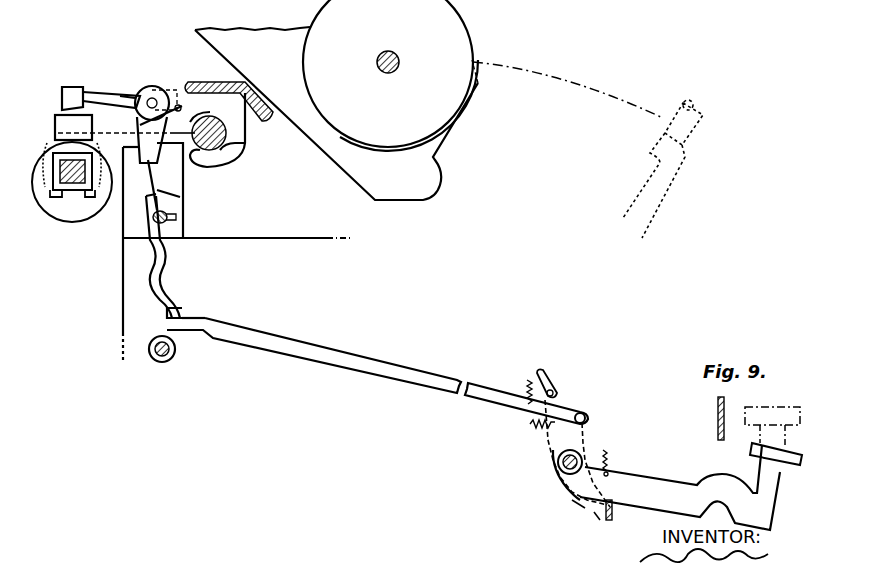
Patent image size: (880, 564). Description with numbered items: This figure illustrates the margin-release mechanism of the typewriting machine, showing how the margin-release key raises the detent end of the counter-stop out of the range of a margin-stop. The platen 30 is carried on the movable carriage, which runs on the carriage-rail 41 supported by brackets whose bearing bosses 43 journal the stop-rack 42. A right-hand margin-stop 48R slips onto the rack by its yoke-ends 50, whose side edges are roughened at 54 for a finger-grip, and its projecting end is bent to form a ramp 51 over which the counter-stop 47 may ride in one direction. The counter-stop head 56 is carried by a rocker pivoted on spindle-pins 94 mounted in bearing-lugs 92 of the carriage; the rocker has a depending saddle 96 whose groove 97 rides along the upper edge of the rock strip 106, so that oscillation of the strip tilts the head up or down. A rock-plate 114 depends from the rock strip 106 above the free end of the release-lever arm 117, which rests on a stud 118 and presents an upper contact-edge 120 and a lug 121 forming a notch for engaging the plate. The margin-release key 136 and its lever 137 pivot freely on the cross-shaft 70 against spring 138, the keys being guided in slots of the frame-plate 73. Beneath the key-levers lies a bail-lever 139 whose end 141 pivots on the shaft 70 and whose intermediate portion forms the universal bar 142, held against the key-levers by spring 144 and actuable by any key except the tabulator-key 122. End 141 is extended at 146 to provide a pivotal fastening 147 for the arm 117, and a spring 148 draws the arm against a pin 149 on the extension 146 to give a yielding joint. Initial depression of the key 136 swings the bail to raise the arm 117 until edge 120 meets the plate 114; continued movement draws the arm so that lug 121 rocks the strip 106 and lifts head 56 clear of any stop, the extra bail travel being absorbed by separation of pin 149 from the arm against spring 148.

The platen 30 is at (390, 75).
The carriage-rail 41 is at (240, 143).
The stop-rack 42 is at (68, 180).
The bearing bosses 43 is at (73, 208).
The counter-stop 47 is at (121, 93).
The right-hand margin-stop 48R is at (92, 117).
The yoke-ends 50 is at (53, 197).
The cam portion or ramp 51 is at (56, 128).
The roughened side edges 54 is at (97, 185).
The counter-stop head 56 is at (62, 88).
The cross-shaft 70 is at (580, 457).
The frame-plate 73 is at (714, 425).
The bearing-lugs 92 is at (185, 104).
The spindle-pins 94 is at (155, 98).
The saddle 96 is at (154, 157).
The flute or groove 97 is at (148, 160).
The rock strip or bar 106 is at (157, 190).
The rock-plate or extension 114 is at (157, 280).
The release-lever arm 117 is at (390, 366).
The stud 118 is at (163, 362).
The upper contact-edge 120 is at (183, 319).
The tab or lug 121 is at (166, 318).
The tabulator-key 122 is at (774, 2).
The margin-release key 136 is at (795, 470).
The margin-release lever 137 is at (646, 479).
The spring 138 is at (607, 456).
The bail-lever 139 is at (575, 506).
The bail-lever end 141 is at (594, 515).
The universal bar 142 is at (612, 508).
The spring 144 is at (530, 424).
The bail-end extension 146 is at (552, 441).
The pivotal fastening 147 is at (586, 414).
The spring 148 is at (527, 390).
The pin 149 is at (554, 388).